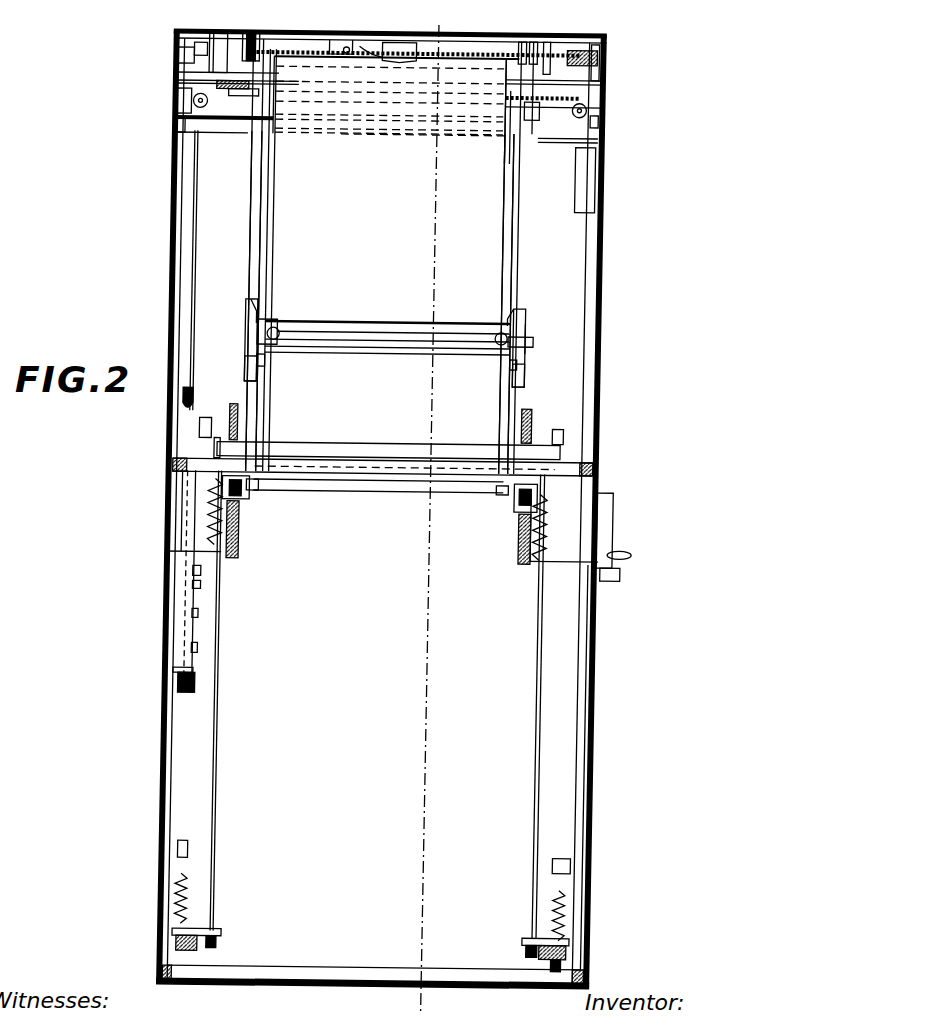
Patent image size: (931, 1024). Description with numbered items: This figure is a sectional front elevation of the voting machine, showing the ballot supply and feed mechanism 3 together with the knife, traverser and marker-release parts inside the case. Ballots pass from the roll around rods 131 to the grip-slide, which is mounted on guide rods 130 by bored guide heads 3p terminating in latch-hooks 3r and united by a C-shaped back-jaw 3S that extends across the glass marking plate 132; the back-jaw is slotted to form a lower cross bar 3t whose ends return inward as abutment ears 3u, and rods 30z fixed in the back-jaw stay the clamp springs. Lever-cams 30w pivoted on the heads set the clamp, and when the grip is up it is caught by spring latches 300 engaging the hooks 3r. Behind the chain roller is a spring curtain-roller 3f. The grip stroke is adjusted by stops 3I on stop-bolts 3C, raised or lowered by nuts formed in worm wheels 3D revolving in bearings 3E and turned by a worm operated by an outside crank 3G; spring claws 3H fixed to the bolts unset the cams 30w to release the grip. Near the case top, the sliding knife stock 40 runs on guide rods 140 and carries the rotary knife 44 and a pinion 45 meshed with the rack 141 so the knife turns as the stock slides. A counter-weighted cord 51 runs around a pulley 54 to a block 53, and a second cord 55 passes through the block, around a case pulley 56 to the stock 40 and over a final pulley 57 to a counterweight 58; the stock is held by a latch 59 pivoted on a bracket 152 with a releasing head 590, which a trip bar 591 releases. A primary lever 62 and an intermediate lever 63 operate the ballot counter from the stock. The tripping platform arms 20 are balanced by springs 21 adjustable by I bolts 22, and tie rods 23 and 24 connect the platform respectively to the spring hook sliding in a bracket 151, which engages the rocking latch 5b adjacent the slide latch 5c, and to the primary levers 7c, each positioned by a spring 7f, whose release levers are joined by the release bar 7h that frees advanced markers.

The ballot supply and feed mechanism 3 is at (439, 23).
The platform arm 20 is at (225, 942).
The balancing spring 21 is at (203, 905).
The I bolt 22 is at (203, 868).
The tie rod 23 is at (230, 780).
The tie rod 24 is at (230, 820).
The knife stock 40 is at (240, 112).
The rotary knife 44 is at (276, 99).
The pinion 45 is at (240, 72).
The counter-weighted cord 51 is at (224, 522).
The block 53 is at (562, 100).
The pulley 54 is at (208, 683).
The second cord 55 is at (199, 268).
The case pulley 56 is at (184, 105).
The final pulley 57 is at (587, 140).
The counterweight 58 is at (580, 188).
The latch 59 is at (226, 40).
The primary lever 62 is at (604, 77).
The intermediate lever 63 is at (560, 46).
The guide rod 130 is at (254, 222).
The rod 131 is at (186, 72).
The glass marking plate 132 is at (264, 188).
The guide rod 140 is at (508, 78).
The rack 141 is at (496, 100).
The bracket 151 is at (209, 612).
The bracket 152 is at (352, 38).
The spring latch 300 is at (251, 38).
The releasing head 590 is at (400, 60).
The trip bar 591 is at (360, 55).
The stop-bolt 3C is at (276, 528).
The worm wheel 3D is at (250, 497).
The bearing 3E is at (270, 490).
The crank 3G is at (622, 508).
The spring claw 3H is at (244, 320).
The stop 3I is at (270, 359).
The back-jaw 3S is at (392, 327).
The spring curtain-roller 3f is at (240, 474).
The guide head 3p is at (257, 377).
The latch-hook 3r is at (252, 305).
The lower cross bar 3t is at (402, 355).
The abutment ear 3u is at (282, 333).
The lever-cam 30w is at (258, 320).
The rod 30z is at (274, 327).
The rocking latch 5b is at (211, 568).
The slide latch 5c is at (211, 585).
The primary lever 7c is at (258, 437).
The spring 7f is at (548, 544).
The release bar 7h is at (398, 442).